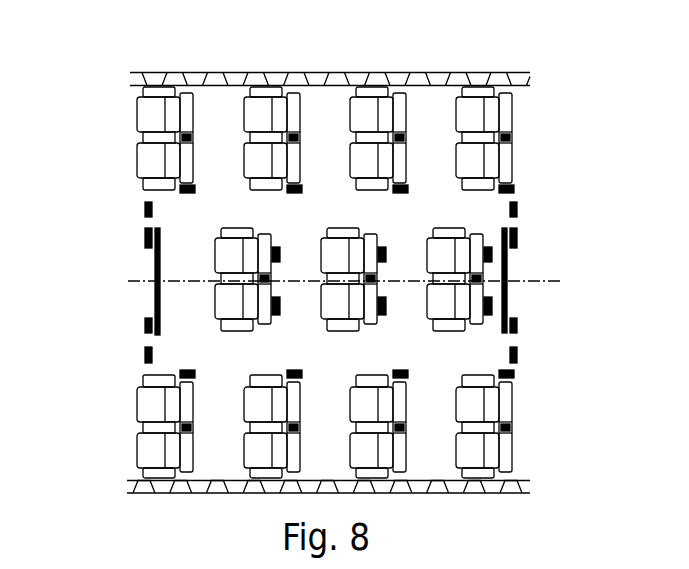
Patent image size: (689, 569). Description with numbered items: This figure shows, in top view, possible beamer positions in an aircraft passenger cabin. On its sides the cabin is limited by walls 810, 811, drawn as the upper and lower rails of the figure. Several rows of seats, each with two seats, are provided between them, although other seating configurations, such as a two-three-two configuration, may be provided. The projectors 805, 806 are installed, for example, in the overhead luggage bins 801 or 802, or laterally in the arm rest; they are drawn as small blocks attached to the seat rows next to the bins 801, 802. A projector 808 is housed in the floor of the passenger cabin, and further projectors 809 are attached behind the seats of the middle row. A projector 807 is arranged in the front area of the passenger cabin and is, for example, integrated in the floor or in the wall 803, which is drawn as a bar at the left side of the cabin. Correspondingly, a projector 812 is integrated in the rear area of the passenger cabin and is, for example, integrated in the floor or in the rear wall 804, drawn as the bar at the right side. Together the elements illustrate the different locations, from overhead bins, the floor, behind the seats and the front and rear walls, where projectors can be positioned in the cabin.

The overhead luggage bin 801 is at (146, 408).
The overhead luggage bin 802 is at (147, 160).
The wall 803 is at (155, 305).
The rear wall 804 is at (508, 306).
The projector 805 is at (185, 370).
The projector 806 is at (186, 194).
The projector 807 is at (145, 237).
The projector 808 is at (145, 357).
The projector 809 is at (277, 250).
The wall 810 is at (515, 74).
The wall 811 is at (515, 496).
The projector 812 is at (518, 237).